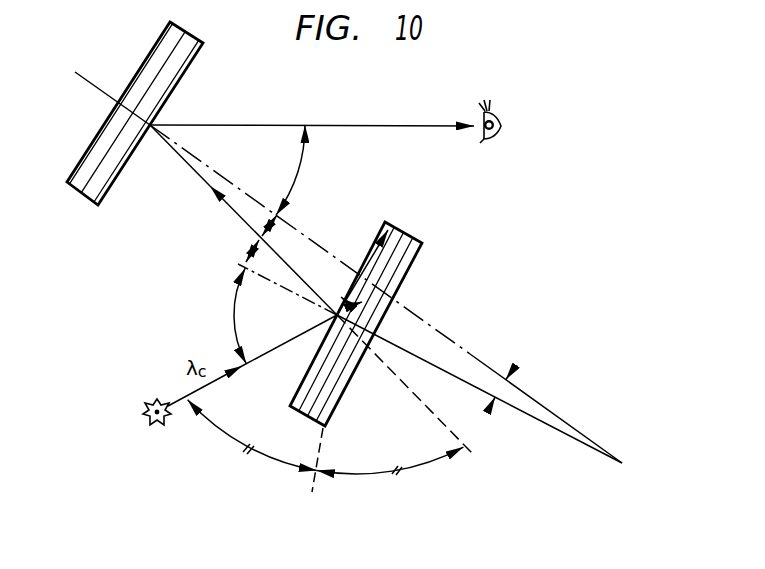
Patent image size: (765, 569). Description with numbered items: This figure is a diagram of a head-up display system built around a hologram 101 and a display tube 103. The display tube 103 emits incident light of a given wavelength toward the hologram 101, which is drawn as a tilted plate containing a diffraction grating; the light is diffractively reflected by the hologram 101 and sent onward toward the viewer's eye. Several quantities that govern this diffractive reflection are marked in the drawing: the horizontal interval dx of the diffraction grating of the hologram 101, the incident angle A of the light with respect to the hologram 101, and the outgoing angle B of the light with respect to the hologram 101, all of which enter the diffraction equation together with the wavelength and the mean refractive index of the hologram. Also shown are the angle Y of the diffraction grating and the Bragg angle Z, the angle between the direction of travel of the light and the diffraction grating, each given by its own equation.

The hologram 101 is at (337, 412).
The display tube 103 is at (155, 402).
The incident angle A is at (233, 316).
The outgoing angle B is at (254, 238).
The angle of the diffraction grating Y is at (346, 301).
The Bragg angle Z is at (326, 451).
The horizontal interval of diffraction grating dx is at (372, 262).